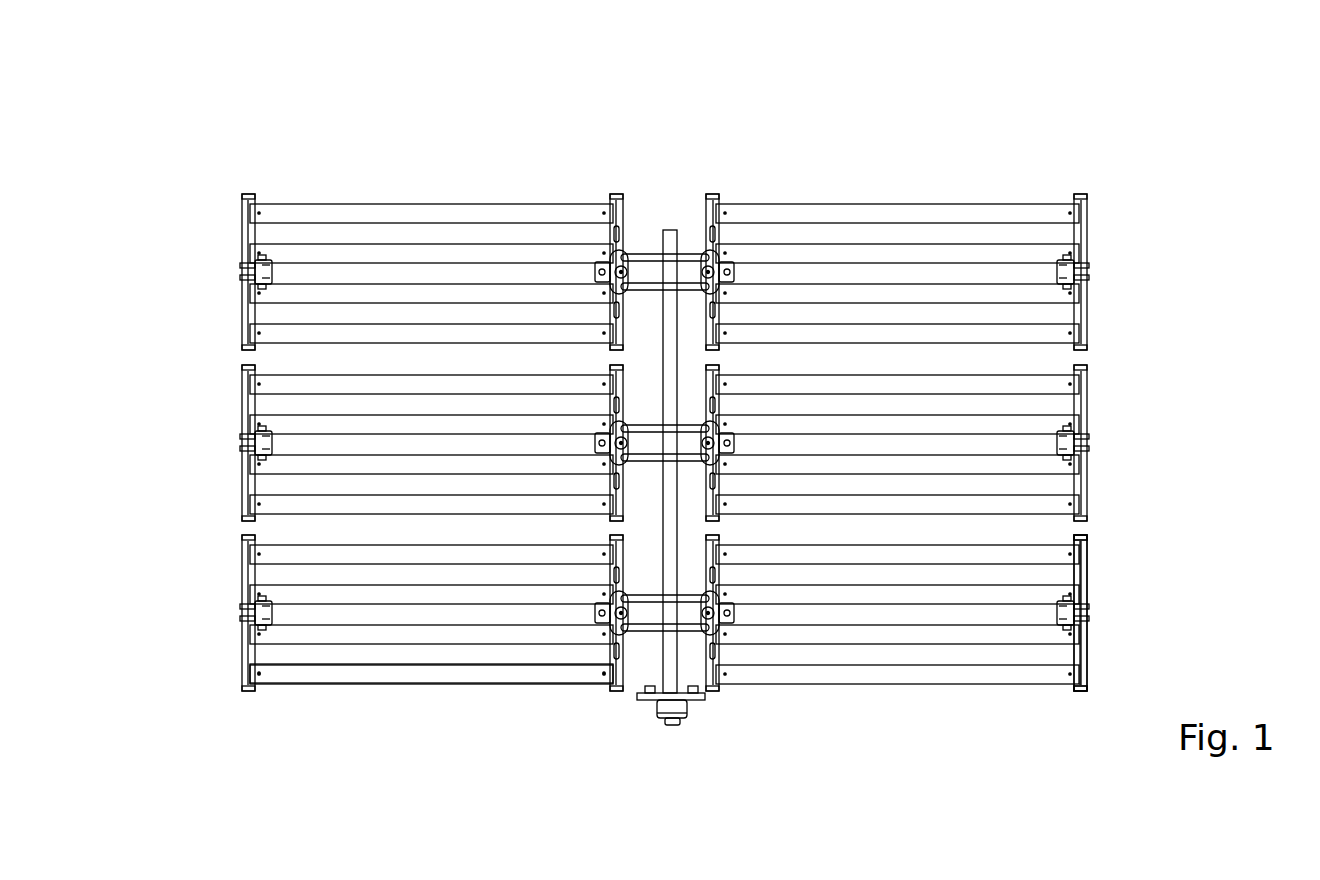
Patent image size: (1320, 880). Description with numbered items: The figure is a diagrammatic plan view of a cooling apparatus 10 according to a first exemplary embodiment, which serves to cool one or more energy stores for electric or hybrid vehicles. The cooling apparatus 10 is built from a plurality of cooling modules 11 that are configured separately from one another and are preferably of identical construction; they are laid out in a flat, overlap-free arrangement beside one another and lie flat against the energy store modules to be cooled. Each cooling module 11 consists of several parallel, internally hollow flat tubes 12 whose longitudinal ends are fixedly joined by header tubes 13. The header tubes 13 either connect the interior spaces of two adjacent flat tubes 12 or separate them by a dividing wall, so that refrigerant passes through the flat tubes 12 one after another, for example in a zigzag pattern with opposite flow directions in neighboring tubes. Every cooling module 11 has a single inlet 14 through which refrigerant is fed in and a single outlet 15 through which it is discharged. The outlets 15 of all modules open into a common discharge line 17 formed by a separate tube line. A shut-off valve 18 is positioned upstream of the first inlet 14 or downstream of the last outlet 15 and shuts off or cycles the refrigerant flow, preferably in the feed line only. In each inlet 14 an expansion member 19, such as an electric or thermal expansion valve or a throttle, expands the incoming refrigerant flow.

The cooling apparatus 10 is at (674, 434).
The cooling module 11 is at (674, 495).
The flat tube 12 is at (431, 673).
The header tube 13 is at (1080, 613).
The inlet 14 is at (693, 627).
The outlet 15 is at (688, 603).
The common discharge line 17 is at (672, 230).
The shut-off valve 18 is at (672, 724).
The expansion member 19 is at (624, 251).